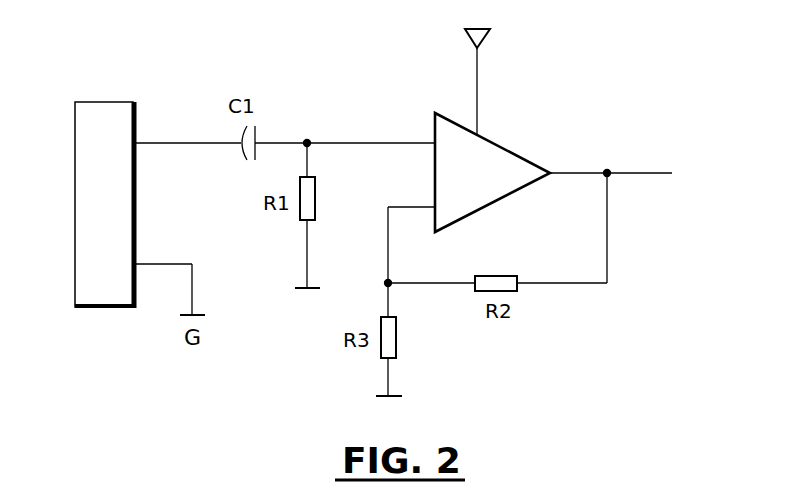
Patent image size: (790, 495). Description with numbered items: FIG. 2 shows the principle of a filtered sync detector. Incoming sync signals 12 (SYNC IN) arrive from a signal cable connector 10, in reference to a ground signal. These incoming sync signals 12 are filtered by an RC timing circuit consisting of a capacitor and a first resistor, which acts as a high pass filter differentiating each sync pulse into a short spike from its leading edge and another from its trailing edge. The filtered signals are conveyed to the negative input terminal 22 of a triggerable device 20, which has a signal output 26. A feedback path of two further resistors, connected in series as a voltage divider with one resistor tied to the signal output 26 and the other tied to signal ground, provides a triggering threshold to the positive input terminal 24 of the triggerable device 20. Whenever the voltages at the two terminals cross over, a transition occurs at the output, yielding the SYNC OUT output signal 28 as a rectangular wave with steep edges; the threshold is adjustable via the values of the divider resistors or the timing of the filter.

The signal cable connector 10 is at (88, 141).
The incoming sync signals 12 is at (162, 140).
The triggerable device 20 is at (488, 150).
The negative input terminal 22 is at (427, 132).
The positive input terminal 24 is at (428, 214).
The signal output 26 is at (553, 178).
The output signal 28 is at (645, 172).